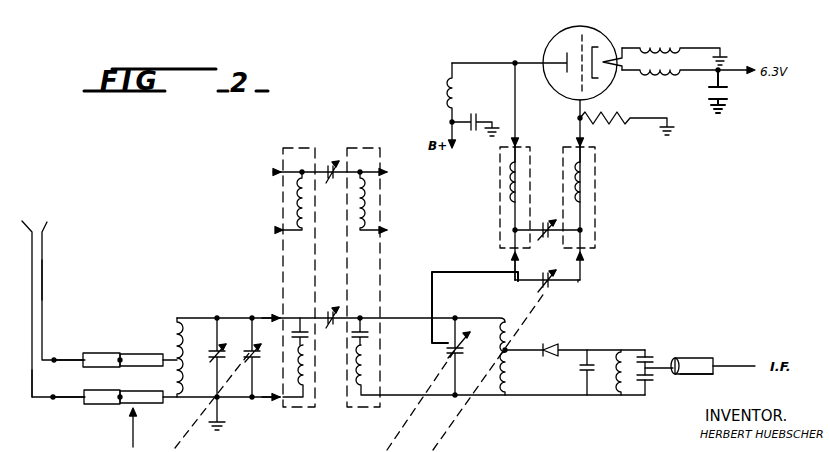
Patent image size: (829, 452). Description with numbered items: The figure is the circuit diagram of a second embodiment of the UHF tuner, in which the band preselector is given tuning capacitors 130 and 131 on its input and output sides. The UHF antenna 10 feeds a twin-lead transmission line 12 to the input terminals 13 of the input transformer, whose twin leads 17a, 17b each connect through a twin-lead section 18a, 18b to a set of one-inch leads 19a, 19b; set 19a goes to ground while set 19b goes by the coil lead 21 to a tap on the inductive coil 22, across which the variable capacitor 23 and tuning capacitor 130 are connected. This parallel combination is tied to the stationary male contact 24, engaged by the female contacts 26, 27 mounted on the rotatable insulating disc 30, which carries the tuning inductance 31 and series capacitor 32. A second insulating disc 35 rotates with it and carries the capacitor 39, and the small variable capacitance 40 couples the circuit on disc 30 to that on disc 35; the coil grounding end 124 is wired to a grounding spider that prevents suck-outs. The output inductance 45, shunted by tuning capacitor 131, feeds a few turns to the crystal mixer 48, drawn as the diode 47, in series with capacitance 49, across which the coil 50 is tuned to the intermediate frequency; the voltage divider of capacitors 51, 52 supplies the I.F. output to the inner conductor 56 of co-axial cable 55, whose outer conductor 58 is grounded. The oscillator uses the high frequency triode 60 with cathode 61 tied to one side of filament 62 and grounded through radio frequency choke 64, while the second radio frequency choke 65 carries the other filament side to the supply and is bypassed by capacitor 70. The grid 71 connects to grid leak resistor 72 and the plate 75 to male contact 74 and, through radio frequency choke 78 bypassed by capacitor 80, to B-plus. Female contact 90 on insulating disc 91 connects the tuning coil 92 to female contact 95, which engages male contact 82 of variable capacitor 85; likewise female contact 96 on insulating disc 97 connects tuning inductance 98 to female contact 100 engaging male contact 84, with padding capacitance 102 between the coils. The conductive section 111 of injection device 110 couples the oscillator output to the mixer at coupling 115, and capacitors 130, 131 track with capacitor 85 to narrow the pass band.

The UHF antenna 10 is at (46, 229).
The transmission line 12 is at (43, 290).
The input terminals 13 is at (73, 338).
The twin lead 17a is at (75, 353).
The twin lead 17b is at (67, 403).
The twin lead line section 18a is at (105, 352).
The twin lead line section 18b is at (103, 406).
The set of leads 19a is at (137, 352).
The set of leads 19b is at (148, 406).
The coil lead 21 is at (175, 350).
The inductive coil 22 is at (192, 378).
The variable capacitor 23 is at (221, 373).
The male contact 24 is at (240, 315).
The female contact 26 is at (271, 314).
The female contact 27 is at (280, 405).
The tuning capacitor 130 is at (262, 357).
The insulating disc 30 is at (299, 147).
The second insulating disc 35 is at (368, 147).
The variable capacitance 40 is at (334, 164).
The female contact 90 is at (340, 308).
The capacitor 32 is at (318, 336).
The tuning inductance 31 is at (313, 373).
The capacitor 39 is at (378, 332).
The grounding end 124 is at (378, 380).
The capacitive coupling 115 is at (436, 334).
The tuning capacitor 131 is at (468, 356).
The injection device 110 is at (455, 271).
The female contact 100 is at (510, 255).
The male contact 84 is at (520, 262).
The conductive section 111 is at (515, 273).
The variable capacitor 85 is at (553, 290).
The male contact 82 is at (582, 280).
The female contact 95 is at (598, 250).
The variable padding capacitance 102 is at (547, 220).
The female contact 96 is at (522, 142).
The insulating disc 97 is at (500, 172).
The tuning inductance 98 is at (510, 190).
The insulating disc 91 is at (597, 172).
The tuning coil 92 is at (590, 195).
The male contact 74 is at (518, 105).
The plate 75 is at (556, 58).
The grid 71 is at (581, 47).
The high frequency triode 60 is at (600, 30).
The cathode 61 is at (600, 45).
The filament 62 is at (612, 64).
The radio frequency choke 64 is at (665, 40).
The second radio frequency choke 65 is at (660, 78).
The capacitor 70 is at (733, 90).
The grid leak resistor 72 is at (627, 122).
The radio frequency choke 78 is at (447, 88).
The capacitor 80 is at (474, 113).
The inductance 45 is at (508, 393).
The diode 47 is at (513, 347).
The crystal mixer 48 is at (562, 344).
The capacitance 49 is at (580, 392).
The coil 50 is at (626, 350).
The capacitor 51 is at (660, 352).
The capacitor 52 is at (655, 378).
The co-axial cable 55 is at (702, 357).
The inner conductor 56 is at (738, 360).
The outer conductor 58 is at (712, 375).